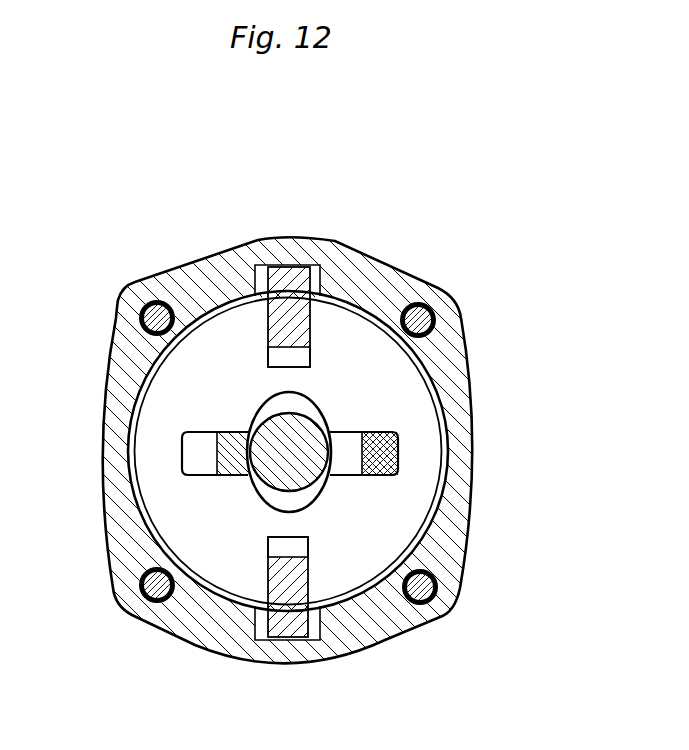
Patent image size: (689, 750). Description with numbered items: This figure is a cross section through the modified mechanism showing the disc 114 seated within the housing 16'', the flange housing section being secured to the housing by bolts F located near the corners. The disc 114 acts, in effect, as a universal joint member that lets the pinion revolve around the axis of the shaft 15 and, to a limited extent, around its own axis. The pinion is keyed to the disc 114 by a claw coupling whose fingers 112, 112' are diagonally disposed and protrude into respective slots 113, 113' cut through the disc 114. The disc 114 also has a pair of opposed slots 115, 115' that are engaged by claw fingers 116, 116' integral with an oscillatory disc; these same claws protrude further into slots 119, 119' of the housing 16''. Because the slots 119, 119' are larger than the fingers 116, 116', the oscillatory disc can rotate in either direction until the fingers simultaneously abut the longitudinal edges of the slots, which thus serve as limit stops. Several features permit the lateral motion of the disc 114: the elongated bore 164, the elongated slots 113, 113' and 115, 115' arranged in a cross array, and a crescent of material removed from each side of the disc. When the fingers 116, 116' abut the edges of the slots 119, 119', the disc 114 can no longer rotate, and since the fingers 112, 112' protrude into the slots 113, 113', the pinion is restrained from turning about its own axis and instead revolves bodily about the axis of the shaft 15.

The housing 16'' is at (287, 433).
The bolts F is at (424, 305).
The claw finger 116' is at (288, 328).
The claw finger 116 is at (282, 571).
The slot 119' is at (270, 280).
The slot 115' is at (200, 306).
The slot 119 is at (286, 630).
The slot 115 is at (176, 558).
The disc 114 is at (190, 417).
The elongated bore 164 is at (287, 410).
The shaft 15 is at (304, 462).
The finger 112 is at (146, 453).
The slot 113 is at (146, 480).
The finger 112' is at (433, 424).
The slot 113' is at (399, 579).